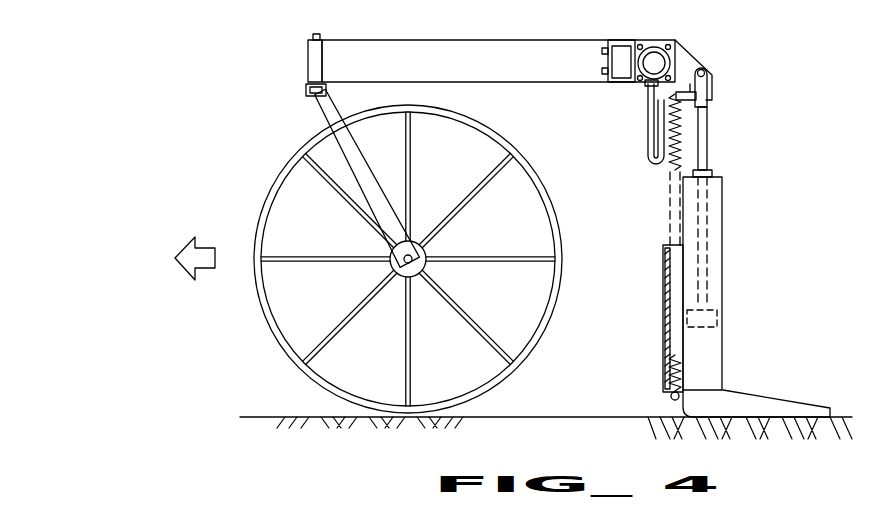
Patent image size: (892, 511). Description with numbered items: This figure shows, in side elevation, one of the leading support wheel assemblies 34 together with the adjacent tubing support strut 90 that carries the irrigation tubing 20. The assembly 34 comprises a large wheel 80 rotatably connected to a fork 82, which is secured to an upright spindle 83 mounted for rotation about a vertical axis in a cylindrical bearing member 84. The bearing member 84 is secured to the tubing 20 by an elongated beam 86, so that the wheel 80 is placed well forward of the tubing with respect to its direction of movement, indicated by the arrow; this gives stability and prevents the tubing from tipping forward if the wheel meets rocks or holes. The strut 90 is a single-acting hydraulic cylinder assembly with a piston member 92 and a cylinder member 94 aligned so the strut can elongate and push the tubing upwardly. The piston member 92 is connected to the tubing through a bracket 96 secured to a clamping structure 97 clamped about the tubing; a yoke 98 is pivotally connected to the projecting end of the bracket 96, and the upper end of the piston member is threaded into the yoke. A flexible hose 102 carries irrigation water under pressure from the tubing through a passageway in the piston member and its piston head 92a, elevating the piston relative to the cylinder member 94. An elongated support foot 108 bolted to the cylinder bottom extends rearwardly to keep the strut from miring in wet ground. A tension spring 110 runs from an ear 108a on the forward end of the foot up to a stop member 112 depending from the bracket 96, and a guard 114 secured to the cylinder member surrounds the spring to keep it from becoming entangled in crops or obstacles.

The tubing 20 is at (666, 52).
The leading support wheel assembly 34 is at (262, 122).
The wheel 80 is at (279, 175).
The fork 82 is at (310, 98).
The spindle 83 is at (313, 36).
The bearing member 84 is at (308, 52).
The beam 86 is at (497, 72).
The tubing support strut 90 is at (724, 210).
The piston member 92 is at (708, 150).
The piston head 92a is at (722, 312).
The cylinder member 94 is at (722, 255).
The bracket 96 is at (690, 53).
The clamping structure 97 is at (648, 48).
The yoke 98 is at (708, 92).
The flexible hose 102 is at (648, 148).
The support foot 108 is at (755, 405).
The ear 108a is at (671, 397).
The tension spring 110 is at (670, 118).
The stop member 112 is at (686, 97).
The guard 114 is at (663, 317).